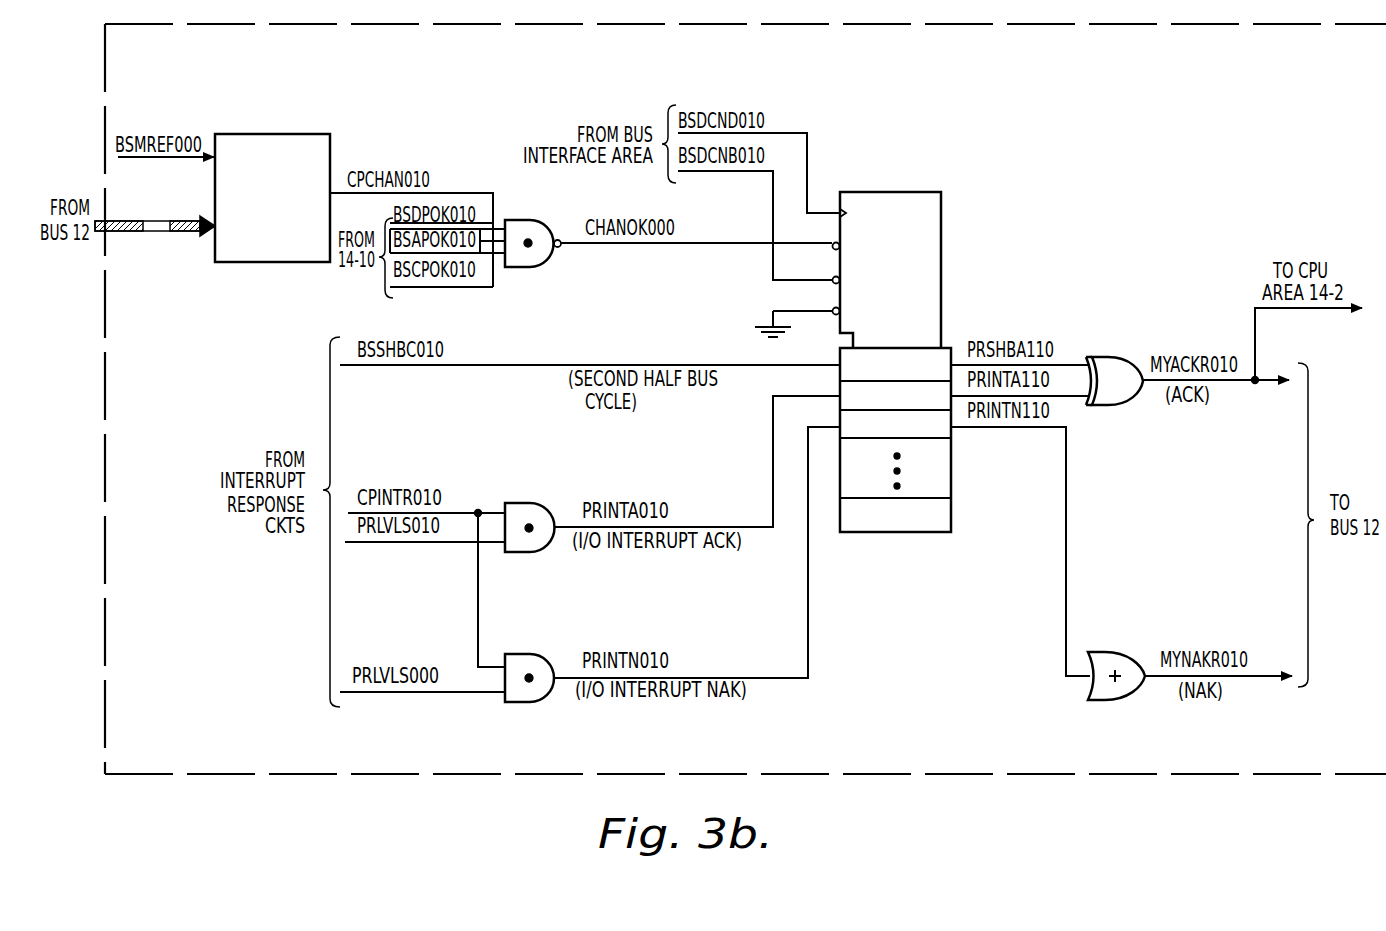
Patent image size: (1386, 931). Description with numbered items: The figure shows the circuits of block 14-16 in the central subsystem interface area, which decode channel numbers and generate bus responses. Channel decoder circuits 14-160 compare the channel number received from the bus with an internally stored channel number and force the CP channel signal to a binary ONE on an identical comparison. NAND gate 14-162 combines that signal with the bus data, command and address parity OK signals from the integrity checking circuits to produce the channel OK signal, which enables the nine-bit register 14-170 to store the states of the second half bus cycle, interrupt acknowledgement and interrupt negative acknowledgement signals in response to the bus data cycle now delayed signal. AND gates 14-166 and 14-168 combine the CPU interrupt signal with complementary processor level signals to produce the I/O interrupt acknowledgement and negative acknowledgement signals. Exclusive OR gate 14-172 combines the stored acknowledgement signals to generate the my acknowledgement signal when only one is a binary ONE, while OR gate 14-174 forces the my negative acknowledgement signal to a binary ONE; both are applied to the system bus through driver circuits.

The block of interrupt response circuits 14-16 is at (935, 758).
The channel decoder circuits 14-160 is at (290, 133).
The NAND gate 14-162 is at (538, 266).
The AND gate 14-166 is at (540, 552).
The AND gate 14-168 is at (540, 702).
The 9-bit register 14-170 is at (941, 210).
The output exclusive OR gate circuit 14-172 is at (1112, 357).
The OR gate 14-174 is at (1112, 652).